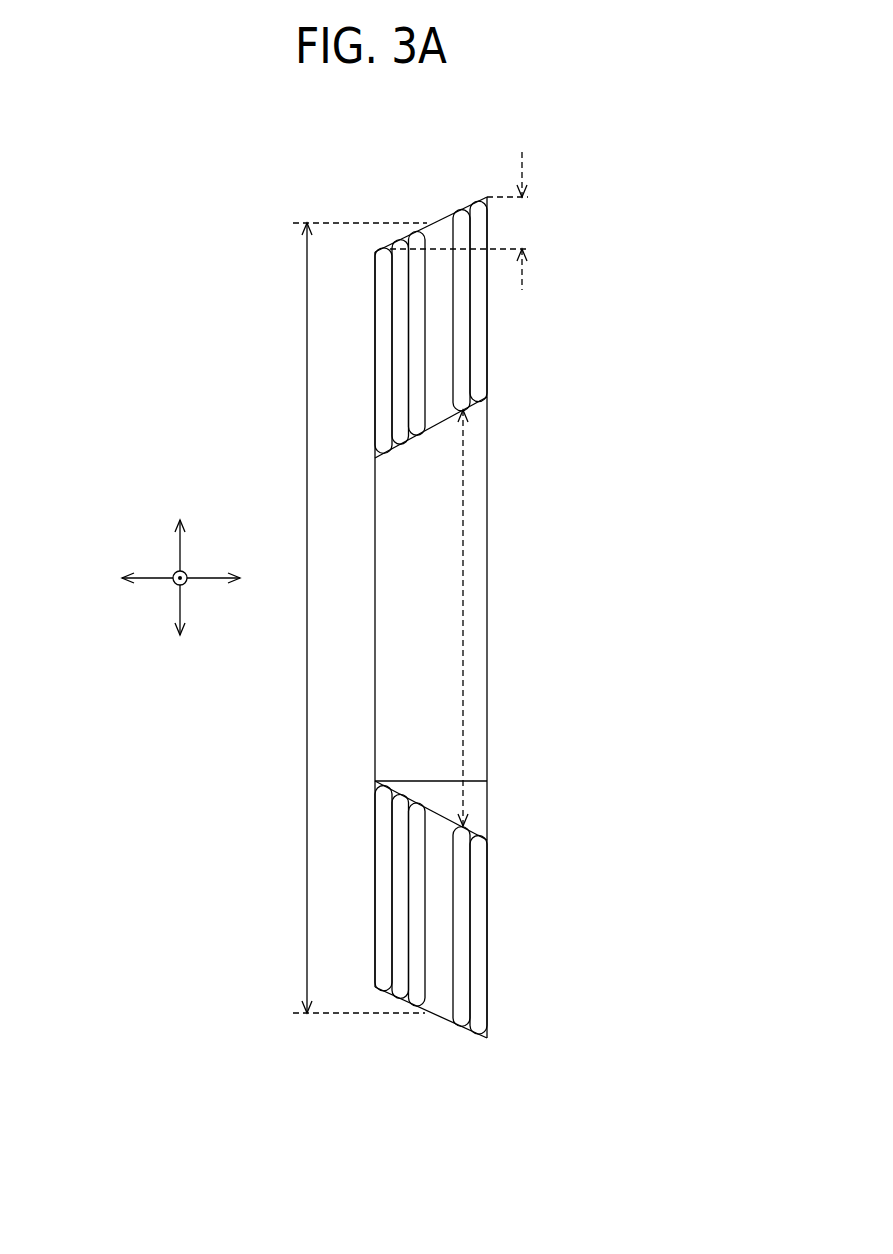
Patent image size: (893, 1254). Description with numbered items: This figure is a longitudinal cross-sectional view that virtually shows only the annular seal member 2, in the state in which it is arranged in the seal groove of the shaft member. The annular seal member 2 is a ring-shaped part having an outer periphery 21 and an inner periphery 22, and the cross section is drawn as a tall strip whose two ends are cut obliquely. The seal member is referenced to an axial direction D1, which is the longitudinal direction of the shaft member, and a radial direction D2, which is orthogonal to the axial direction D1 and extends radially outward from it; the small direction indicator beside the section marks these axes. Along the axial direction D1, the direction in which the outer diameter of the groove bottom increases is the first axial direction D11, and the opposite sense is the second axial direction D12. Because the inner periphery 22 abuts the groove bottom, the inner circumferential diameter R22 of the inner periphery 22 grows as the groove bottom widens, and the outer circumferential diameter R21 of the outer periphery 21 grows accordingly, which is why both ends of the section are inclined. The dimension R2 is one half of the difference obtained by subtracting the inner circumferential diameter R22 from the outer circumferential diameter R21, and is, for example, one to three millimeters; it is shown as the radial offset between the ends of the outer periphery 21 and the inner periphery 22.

The annular seal member 2 is at (443, 578).
The outer periphery 21 is at (461, 208).
The inner periphery 22 is at (402, 448).
The half radial width R2 is at (467, 221).
The outer circumferential diameter R21 is at (307, 763).
The inner circumferential diameter R22 is at (463, 592).
The axial direction D1 is at (200, 582).
The radial direction D2 is at (180, 558).
The first axial direction D11 is at (243, 577).
The second axial direction D12 is at (121, 577).